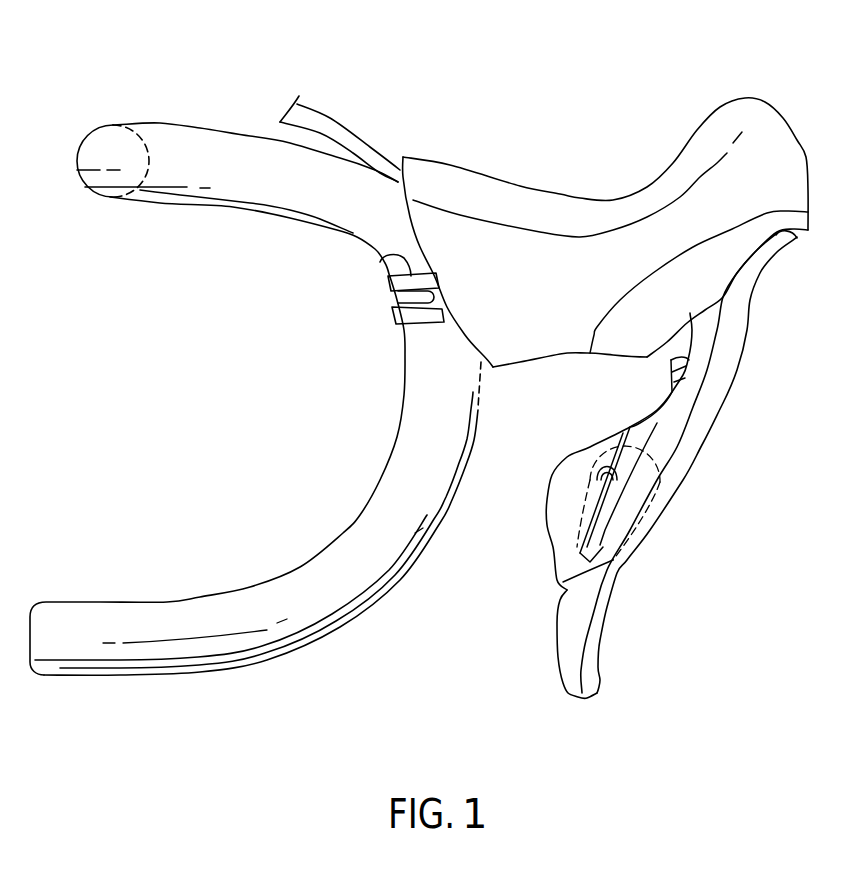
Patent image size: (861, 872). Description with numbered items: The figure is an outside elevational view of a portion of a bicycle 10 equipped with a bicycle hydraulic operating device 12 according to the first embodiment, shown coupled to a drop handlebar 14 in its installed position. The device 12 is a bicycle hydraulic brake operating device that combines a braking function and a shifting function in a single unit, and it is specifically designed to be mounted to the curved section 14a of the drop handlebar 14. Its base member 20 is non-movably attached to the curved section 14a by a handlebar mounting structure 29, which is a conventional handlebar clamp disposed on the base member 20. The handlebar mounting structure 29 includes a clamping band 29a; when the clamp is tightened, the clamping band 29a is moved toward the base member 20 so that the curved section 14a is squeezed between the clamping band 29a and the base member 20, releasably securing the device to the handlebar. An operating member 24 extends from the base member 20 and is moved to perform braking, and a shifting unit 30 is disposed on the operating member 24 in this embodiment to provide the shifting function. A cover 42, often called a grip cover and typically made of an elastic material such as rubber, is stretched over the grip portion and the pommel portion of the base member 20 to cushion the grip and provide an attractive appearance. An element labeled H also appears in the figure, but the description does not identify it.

The bicycle 10 is at (100, 113).
The bicycle hydraulic operating device 12 is at (752, 86).
The drop handlebar 14 is at (206, 128).
The curved section 14a is at (404, 354).
The base member 20 is at (610, 356).
The operating member 24 is at (706, 446).
The handlebar mounting structure 29 is at (387, 296).
The clamping band 29a is at (380, 260).
The shifting unit 30 is at (664, 493).
The cover 42 is at (503, 200).
The hydraulic hose H is at (350, 123).